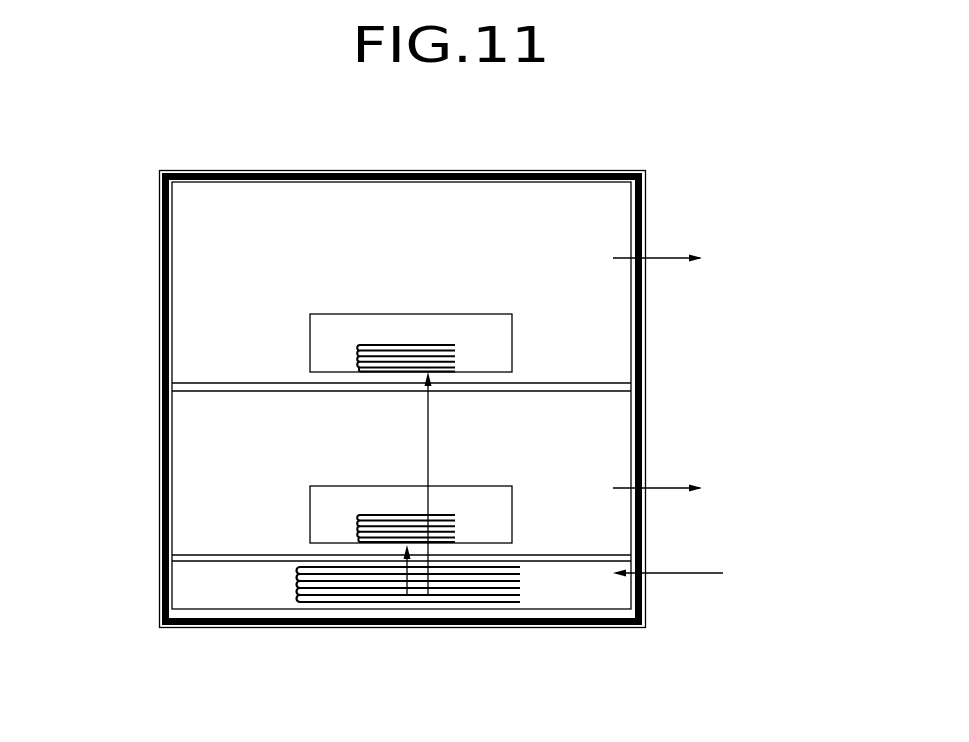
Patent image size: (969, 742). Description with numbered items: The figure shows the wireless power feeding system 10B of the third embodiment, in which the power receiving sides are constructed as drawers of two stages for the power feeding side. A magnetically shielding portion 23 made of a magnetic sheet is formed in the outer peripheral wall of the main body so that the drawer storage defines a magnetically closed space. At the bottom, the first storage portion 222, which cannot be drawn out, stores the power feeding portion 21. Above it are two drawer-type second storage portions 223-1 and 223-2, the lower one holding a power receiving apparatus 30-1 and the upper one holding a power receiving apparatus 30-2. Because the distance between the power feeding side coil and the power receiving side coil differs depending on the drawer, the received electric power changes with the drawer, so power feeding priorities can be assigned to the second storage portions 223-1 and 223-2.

The wireless power feeding system 10B is at (431, 133).
The magnetically shielding portion 23 is at (644, 195).
The second storage portion 223-2 is at (632, 330).
The second storage portion 223-1 is at (632, 430).
The first storage portion 222 is at (172, 580).
The power receiving apparatus 30-2 is at (450, 306).
The power receiving apparatus 30-1 is at (486, 480).
The power feeding portion 21 is at (527, 599).